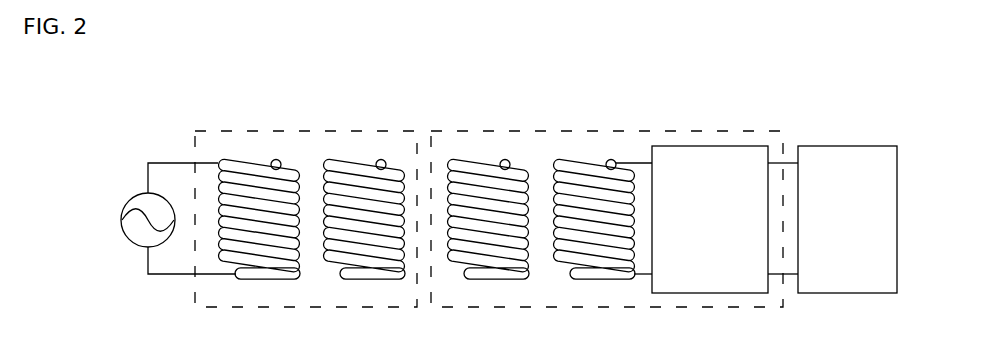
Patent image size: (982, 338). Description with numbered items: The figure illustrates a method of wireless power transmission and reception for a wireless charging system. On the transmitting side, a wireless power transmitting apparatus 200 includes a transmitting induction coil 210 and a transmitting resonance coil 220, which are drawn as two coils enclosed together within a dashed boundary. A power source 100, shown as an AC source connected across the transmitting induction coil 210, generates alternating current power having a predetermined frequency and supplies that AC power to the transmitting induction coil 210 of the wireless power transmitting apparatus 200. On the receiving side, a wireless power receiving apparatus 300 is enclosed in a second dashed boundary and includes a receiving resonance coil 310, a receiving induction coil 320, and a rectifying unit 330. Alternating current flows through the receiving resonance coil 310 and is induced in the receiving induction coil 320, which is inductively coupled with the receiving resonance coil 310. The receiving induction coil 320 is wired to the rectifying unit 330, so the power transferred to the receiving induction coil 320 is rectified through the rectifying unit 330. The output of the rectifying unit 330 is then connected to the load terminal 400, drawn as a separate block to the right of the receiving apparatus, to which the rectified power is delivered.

The power source 100 is at (128, 192).
The wireless power transmitting apparatus 200 is at (205, 128).
The transmitting induction coil 210 is at (268, 170).
The transmitting resonance coil 220 is at (371, 170).
The wireless power receiving apparatus 300 is at (437, 128).
The receiving resonance coil 310 is at (495, 170).
The receiving induction coil 320 is at (597, 170).
The rectifying unit 330 is at (713, 143).
The load terminal 400 is at (833, 143).